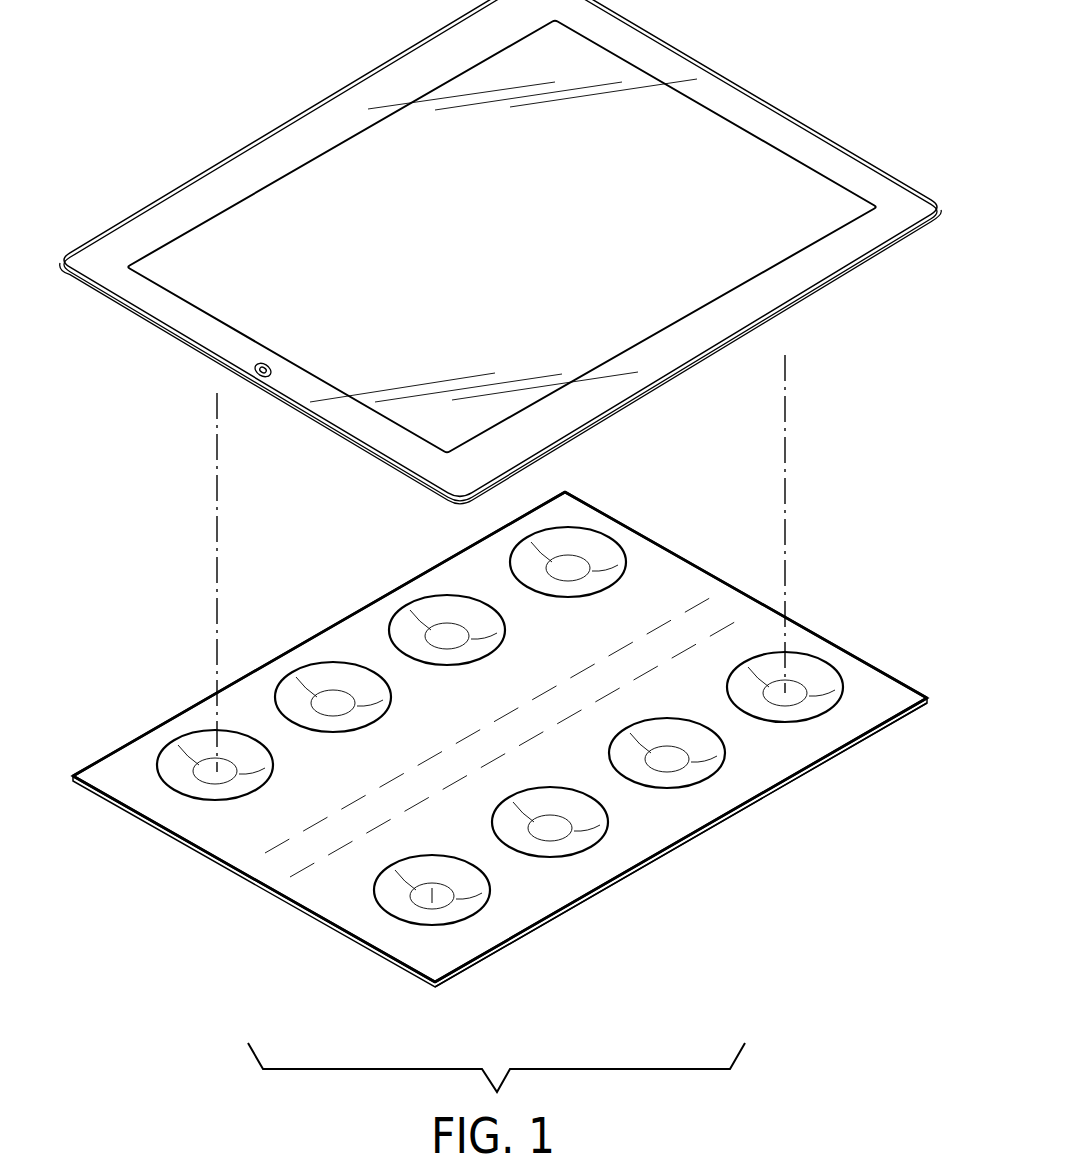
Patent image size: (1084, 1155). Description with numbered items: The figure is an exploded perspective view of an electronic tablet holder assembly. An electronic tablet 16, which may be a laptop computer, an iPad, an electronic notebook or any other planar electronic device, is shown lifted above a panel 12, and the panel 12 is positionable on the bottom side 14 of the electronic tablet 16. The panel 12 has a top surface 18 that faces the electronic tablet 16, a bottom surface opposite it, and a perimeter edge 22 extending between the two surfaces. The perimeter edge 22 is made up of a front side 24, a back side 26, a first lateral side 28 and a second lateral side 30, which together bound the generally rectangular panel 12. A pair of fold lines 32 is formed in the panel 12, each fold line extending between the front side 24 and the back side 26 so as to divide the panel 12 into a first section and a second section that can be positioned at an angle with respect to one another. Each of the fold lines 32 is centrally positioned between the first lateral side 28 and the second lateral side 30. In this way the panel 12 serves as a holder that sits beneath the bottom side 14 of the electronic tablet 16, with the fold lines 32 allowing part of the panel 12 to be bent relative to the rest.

The panel 12 is at (113, 750).
The bottom side 14 is at (153, 338).
The electronic tablet 16 is at (263, 137).
The top surface 18 is at (345, 647).
The perimeter edge 22 is at (657, 863).
The front side 24 is at (682, 557).
The back side 26 is at (188, 848).
The first lateral side 28 is at (182, 710).
The second lateral side 30 is at (755, 797).
The fold lines 32 is at (272, 850).